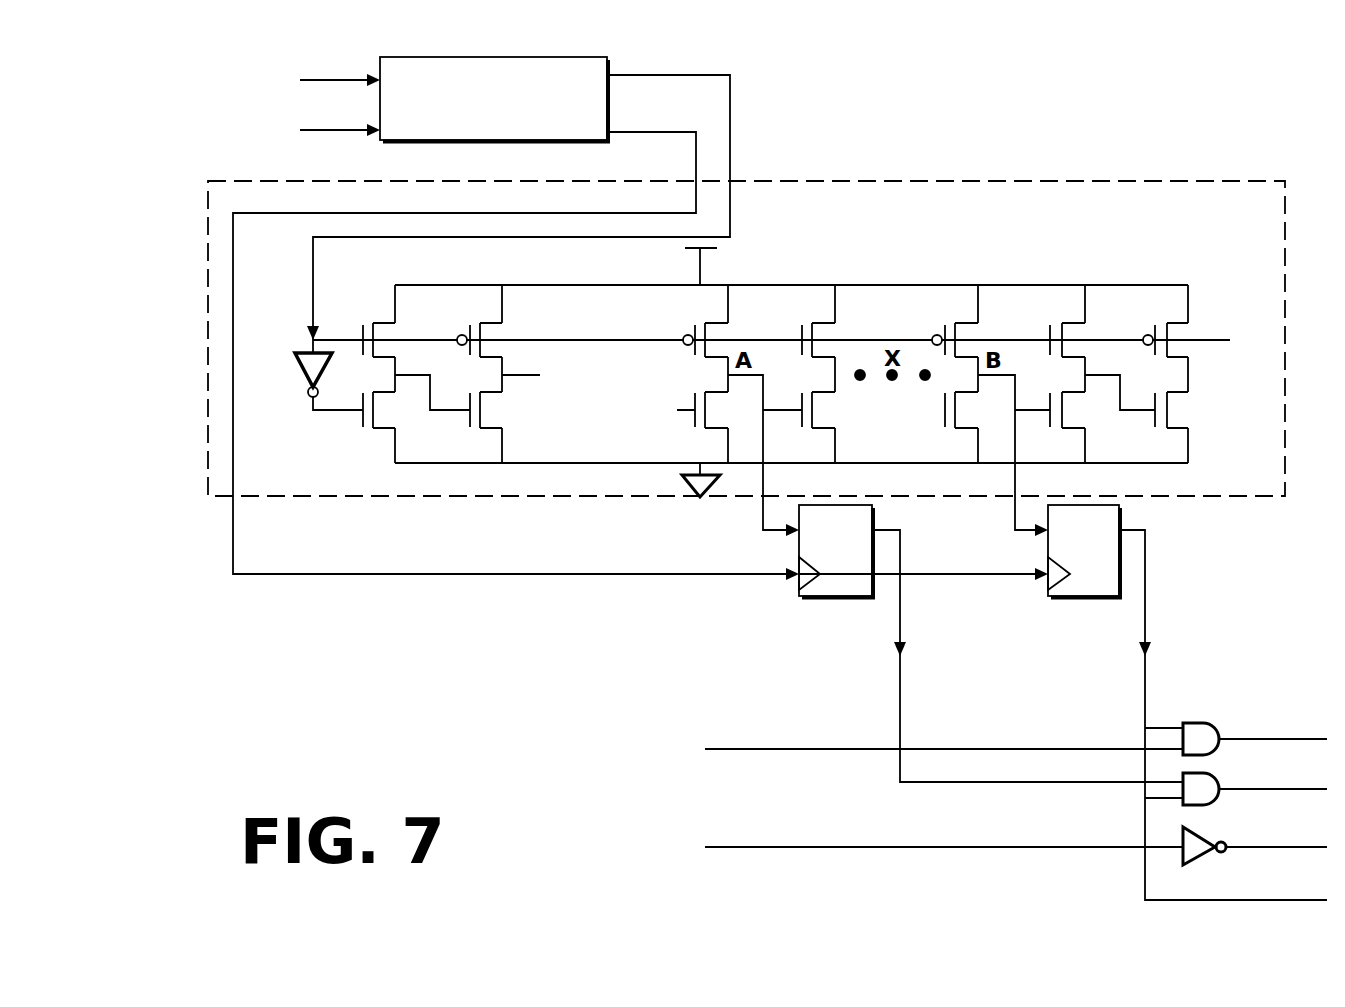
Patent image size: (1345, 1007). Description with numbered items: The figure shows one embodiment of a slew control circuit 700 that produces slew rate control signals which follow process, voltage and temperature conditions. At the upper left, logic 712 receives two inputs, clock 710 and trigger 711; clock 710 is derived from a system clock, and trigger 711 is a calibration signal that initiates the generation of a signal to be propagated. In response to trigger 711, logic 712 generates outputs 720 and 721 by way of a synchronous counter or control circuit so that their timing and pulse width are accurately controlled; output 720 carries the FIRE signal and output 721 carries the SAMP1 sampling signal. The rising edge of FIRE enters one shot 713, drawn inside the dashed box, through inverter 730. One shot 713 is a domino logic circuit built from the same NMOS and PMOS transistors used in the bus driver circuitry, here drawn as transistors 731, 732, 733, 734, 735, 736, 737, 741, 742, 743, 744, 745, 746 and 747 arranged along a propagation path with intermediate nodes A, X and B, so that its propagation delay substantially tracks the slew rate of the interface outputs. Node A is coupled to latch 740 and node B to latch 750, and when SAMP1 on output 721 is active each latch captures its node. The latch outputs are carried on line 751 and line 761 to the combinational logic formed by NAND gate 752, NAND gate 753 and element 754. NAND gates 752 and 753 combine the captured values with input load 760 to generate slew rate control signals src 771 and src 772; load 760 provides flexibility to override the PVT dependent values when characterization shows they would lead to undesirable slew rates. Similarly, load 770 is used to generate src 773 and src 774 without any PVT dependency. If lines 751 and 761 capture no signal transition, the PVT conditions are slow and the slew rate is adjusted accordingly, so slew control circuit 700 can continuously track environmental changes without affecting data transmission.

The slew control circuit 700 is at (1034, 114).
The clock 710 is at (310, 71).
The trigger 711 is at (300, 121).
The logic 712 is at (495, 99).
The one shot 713 is at (746, 196).
The output 720 is at (642, 73).
The output 721 is at (668, 134).
The inverter 730 is at (302, 384).
The PMOS transistor 731 is at (395, 333).
The PMOS transistor 732 is at (502, 333).
The PMOS transistor 733 is at (728, 333).
The PMOS transistor 734 is at (835, 333).
The PMOS transistor 735 is at (978, 333).
The PMOS transistor 736 is at (1085, 333).
The PMOS transistor 737 is at (1188, 333).
The latch 740 is at (828, 600).
The NMOS transistor 741 is at (395, 412).
The NMOS transistor 742 is at (502, 412).
The NMOS transistor 743 is at (716, 422).
The NMOS transistor 744 is at (835, 412).
The NMOS transistor 745 is at (968, 422).
The NMOS transistor 746 is at (1085, 412).
The NMOS transistor 747 is at (1188, 412).
The latch 750 is at (1078, 600).
The line 751 is at (1148, 598).
The NAND gate 752 is at (1183, 727).
The NAND gate 753 is at (1183, 803).
The combinational logic 754 is at (1183, 853).
The load 760 is at (944, 734).
The line 761 is at (902, 618).
The load 770 is at (944, 832).
The src 771 is at (1274, 724).
The src 772 is at (1274, 774).
The src 773 is at (1277, 832).
The src 774 is at (1237, 885).